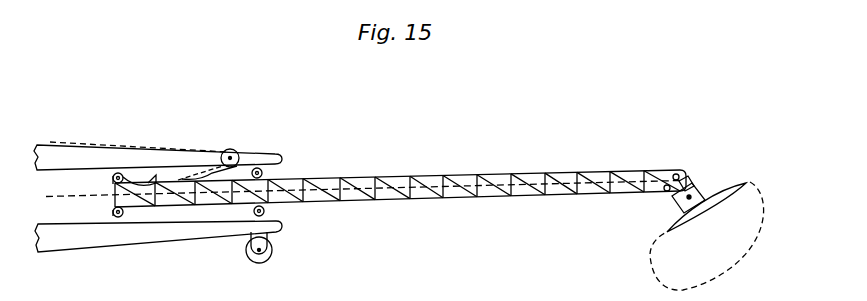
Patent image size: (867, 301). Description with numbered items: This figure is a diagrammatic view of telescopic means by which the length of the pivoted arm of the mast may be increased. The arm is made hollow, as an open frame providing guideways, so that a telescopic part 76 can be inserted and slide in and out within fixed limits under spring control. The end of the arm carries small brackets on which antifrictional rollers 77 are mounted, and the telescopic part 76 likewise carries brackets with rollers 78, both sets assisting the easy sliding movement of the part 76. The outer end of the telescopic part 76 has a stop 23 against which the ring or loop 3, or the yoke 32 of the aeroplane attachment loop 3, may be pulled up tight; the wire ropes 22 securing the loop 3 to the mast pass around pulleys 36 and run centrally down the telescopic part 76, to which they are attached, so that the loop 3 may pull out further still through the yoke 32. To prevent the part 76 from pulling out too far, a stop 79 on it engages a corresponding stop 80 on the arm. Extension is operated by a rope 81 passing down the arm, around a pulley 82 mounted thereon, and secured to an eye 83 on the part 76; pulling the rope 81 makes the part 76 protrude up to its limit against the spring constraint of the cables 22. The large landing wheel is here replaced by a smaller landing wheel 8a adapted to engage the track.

The ring or loop 3 is at (651, 270).
The smaller landing wheel 8a is at (246, 254).
The wire ropes 22 is at (48, 196).
The stop 23 is at (688, 180).
The yoke 32 is at (700, 184).
The pulleys 36 is at (678, 174).
The telescopic part 76 is at (376, 177).
The antifrictional rollers 77 is at (263, 175).
The rollers 78 is at (116, 175).
The stop 79 is at (152, 178).
The stop 80 is at (205, 173).
The rope 81 is at (51, 141).
The pulley 82 is at (233, 150).
The eye 83 is at (182, 177).